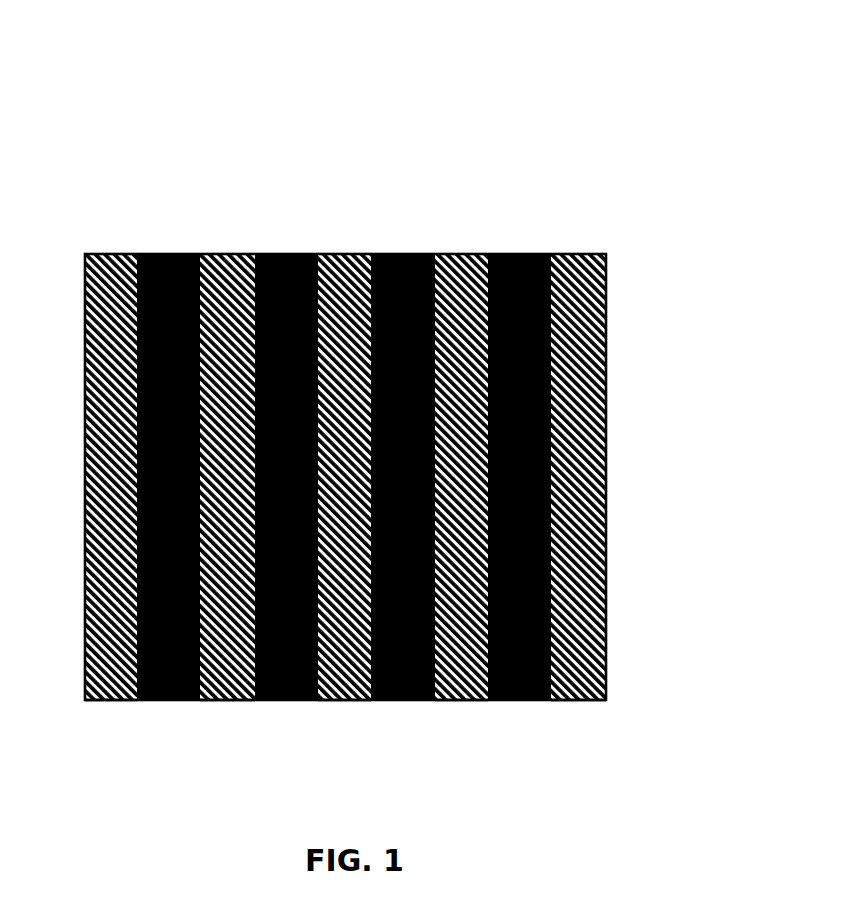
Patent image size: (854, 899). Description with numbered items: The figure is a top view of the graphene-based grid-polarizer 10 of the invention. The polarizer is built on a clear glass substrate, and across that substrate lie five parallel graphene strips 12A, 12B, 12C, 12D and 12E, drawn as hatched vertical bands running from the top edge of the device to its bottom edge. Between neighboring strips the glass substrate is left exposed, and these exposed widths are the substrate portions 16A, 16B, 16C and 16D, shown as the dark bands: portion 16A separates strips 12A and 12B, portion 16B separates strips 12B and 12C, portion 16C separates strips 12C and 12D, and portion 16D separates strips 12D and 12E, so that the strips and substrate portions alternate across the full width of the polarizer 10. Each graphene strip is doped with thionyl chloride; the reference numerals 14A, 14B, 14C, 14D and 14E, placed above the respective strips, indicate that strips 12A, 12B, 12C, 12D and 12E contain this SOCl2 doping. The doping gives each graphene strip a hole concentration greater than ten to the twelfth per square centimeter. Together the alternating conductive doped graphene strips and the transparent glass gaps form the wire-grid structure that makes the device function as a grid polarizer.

The graphene-based grid-polarizer 10 is at (450, 88).
The graphene strip 12A is at (100, 692).
The graphene strip 12B is at (217, 692).
The graphene strip 12C is at (332, 692).
The graphene strip 12D is at (445, 692).
The graphene strip 12E is at (565, 692).
The SOCl2 doping 14A is at (110, 246).
The SOCl2 doping 14B is at (225, 246).
The SOCl2 doping 14C is at (340, 246).
The SOCl2 doping 14D is at (457, 246).
The SOCl2 doping 14E is at (575, 246).
The portion of glass substrate 16A is at (158, 246).
The portion of glass substrate 16B is at (283, 246).
The portion of glass substrate 16C is at (397, 246).
The portion of glass substrate 16D is at (515, 246).